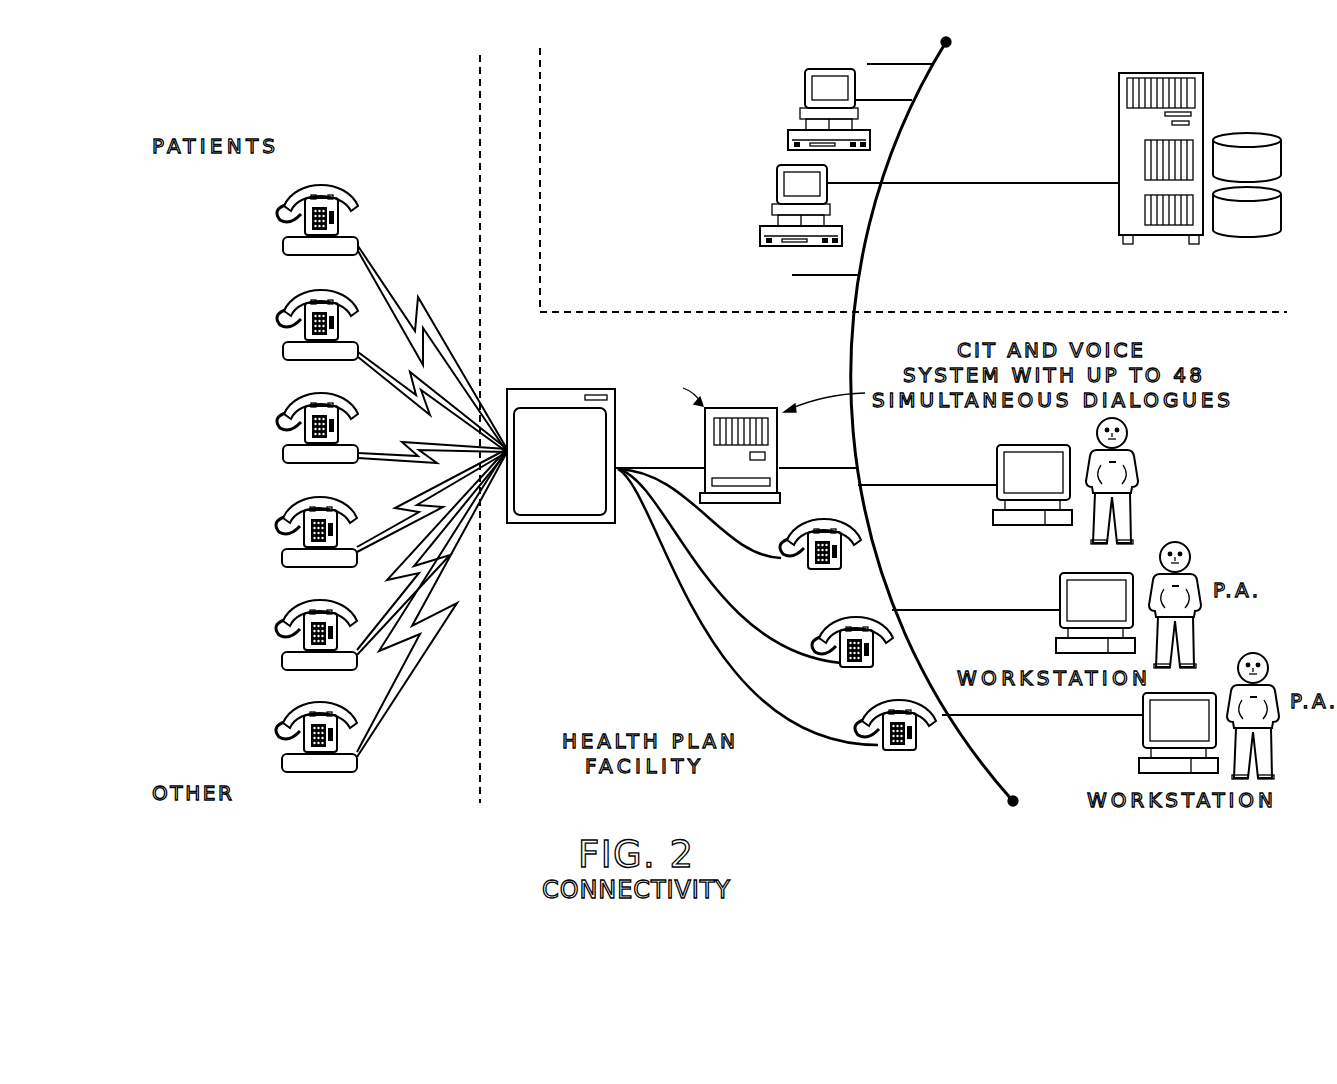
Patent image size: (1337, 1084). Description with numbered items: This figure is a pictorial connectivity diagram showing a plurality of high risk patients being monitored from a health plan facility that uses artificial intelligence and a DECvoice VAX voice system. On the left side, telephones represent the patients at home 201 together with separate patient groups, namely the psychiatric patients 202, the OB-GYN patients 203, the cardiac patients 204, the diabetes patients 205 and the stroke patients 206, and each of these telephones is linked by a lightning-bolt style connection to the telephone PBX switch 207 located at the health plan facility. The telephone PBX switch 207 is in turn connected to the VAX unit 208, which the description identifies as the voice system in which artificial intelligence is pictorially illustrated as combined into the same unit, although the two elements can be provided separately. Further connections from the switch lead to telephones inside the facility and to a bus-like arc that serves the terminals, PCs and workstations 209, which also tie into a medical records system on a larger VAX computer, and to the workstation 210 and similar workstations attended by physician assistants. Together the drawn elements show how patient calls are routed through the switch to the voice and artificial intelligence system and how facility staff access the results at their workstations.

The patients at home telephone 201 is at (329, 305).
The psychiatric patient telephone 202 is at (329, 358).
The OB-GYN patient telephone 203 is at (329, 416).
The cardiac patient telephone 204 is at (329, 508).
The diabetes patient telephone 205 is at (329, 559).
The stroke patient telephone 206 is at (329, 610).
The telephone PBX switch 207 is at (549, 389).
The CIT and voice system (VAX 4000) 208 is at (746, 408).
The terminals, PCs and workstations / medical records system 209 is at (1119, 121).
The workstation 210 is at (1029, 501).